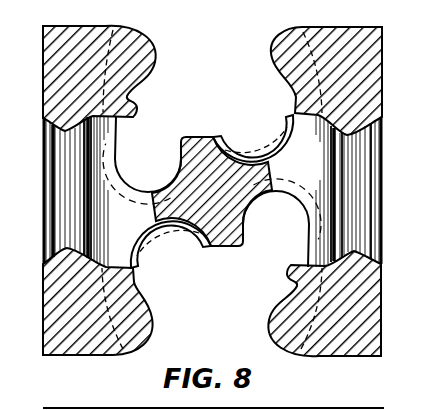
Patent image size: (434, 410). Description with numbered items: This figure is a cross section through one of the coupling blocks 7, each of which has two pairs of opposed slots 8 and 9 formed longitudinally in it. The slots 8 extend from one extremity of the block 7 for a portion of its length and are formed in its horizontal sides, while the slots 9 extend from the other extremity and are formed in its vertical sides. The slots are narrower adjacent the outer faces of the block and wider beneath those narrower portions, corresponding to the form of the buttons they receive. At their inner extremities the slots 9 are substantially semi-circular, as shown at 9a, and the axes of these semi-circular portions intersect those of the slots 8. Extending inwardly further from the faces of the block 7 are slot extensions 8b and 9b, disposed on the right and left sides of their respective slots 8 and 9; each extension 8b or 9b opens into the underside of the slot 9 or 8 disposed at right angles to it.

The coupling block 7 is at (382, 63).
The slots 8 is at (212, 183).
The slot extensions 8b is at (212, 192).
The slots 9 is at (212, 191).
The inner ends of the slots 9a is at (43, 152).
The slot extensions 9b is at (255, 143).